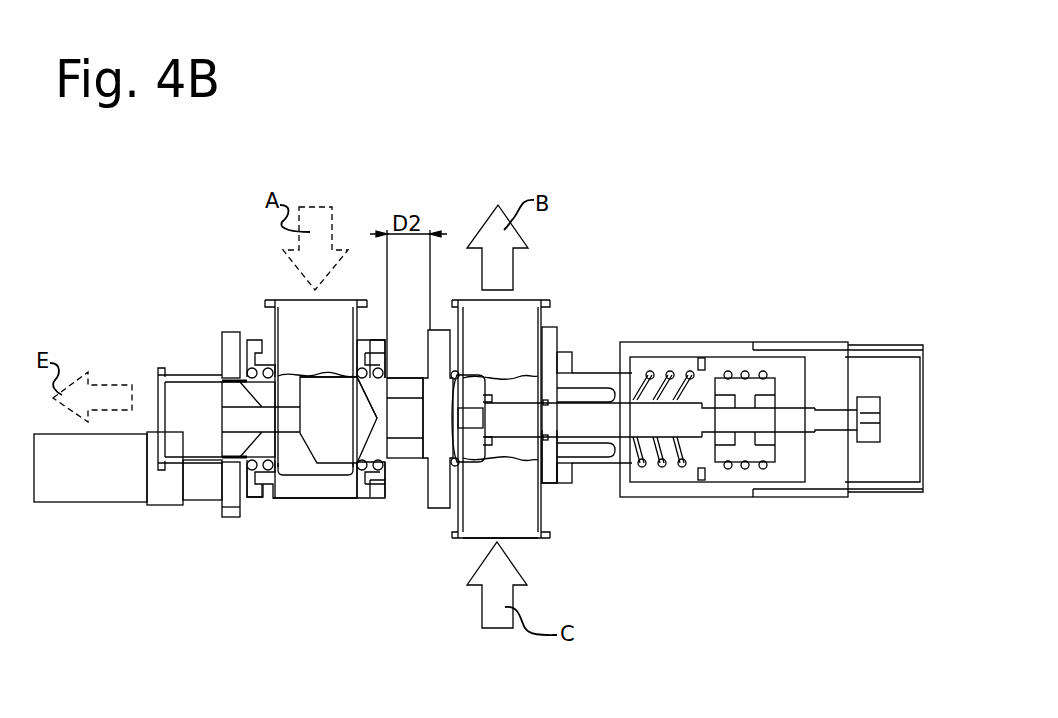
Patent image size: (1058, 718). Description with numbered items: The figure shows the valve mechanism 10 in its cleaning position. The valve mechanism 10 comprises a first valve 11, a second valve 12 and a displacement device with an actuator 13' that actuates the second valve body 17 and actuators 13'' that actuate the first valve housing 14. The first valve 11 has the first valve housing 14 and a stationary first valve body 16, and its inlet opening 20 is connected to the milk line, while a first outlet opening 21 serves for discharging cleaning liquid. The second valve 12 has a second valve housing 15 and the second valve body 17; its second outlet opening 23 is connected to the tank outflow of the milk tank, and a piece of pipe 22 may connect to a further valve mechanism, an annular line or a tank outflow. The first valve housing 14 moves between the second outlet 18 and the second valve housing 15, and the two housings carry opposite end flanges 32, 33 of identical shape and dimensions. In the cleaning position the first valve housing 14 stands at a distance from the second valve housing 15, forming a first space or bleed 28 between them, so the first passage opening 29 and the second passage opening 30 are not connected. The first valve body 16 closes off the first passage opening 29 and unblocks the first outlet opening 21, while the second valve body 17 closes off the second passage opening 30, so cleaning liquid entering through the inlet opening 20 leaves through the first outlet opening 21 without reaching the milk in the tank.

The valve mechanism 10 is at (98, 330).
The first valve 11 is at (280, 502).
The second valve 12 is at (555, 305).
The actuator 13' is at (771, 384).
The actuators 13'' is at (123, 496).
The first valve housing 14 is at (322, 492).
The second valve housing 15 is at (555, 480).
The first valve body 16 is at (342, 452).
The second valve body 17 is at (473, 448).
The second outlet 18 is at (163, 398).
The inlet opening 20 is at (342, 308).
The first outlet opening 21 is at (220, 376).
The piece of pipe 22 is at (522, 530).
The second outlet opening 23 is at (528, 300).
The first space 28 is at (417, 450).
The first passage opening 29 is at (395, 380).
The second passage opening 30 is at (422, 447).
The end flange 32 is at (438, 332).
The end flange 33 is at (375, 328).